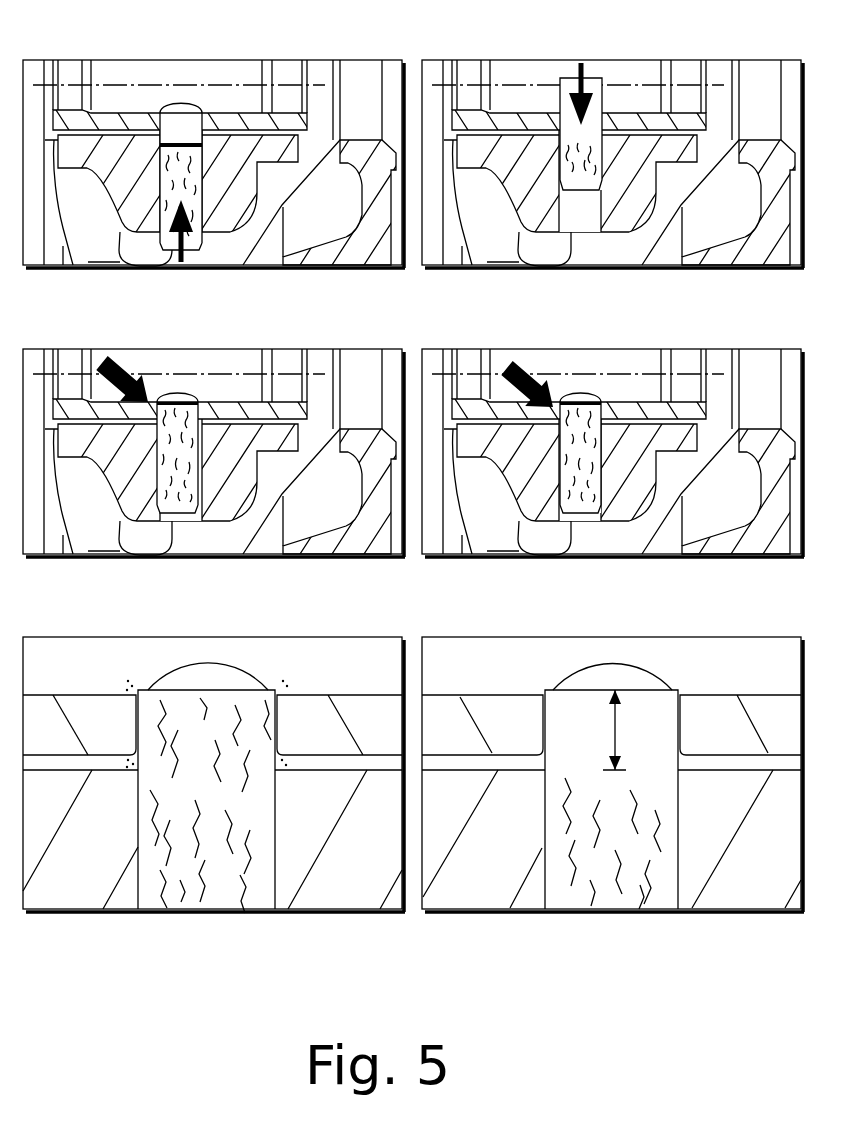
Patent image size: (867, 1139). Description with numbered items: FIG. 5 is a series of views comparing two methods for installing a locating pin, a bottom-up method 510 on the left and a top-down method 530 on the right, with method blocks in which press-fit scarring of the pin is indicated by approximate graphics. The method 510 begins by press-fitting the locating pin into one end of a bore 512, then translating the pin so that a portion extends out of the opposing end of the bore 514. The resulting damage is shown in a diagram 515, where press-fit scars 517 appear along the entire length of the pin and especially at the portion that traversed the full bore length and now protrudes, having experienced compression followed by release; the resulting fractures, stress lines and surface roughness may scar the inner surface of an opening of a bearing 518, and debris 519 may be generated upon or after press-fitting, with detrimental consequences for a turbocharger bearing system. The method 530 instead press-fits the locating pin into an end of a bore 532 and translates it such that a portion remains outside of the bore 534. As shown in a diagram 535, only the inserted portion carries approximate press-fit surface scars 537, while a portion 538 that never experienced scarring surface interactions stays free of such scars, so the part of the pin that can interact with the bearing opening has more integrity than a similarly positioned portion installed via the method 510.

The bottom-up method 510 is at (285, 24).
The top-down method 530 is at (677, 24).
The method block showing press-fitting into one end of a bore 512 is at (382, 95).
The method block showing translation out of opposing end of bore 514 is at (382, 384).
The diagram of damage 515 is at (214, 775).
The press-fit scars 517 is at (157, 712).
The bearing 518 is at (279, 726).
The debris 519 is at (113, 686).
The method block showing press-fitting into an end of a bore 532 is at (781, 95).
The method block showing a portion remaining outside the bore 534 is at (781, 384).
The diagram of press-fit surface scars and scar-free portion 535 is at (613, 774).
The press-fit surface scars 537 is at (567, 805).
The portion free of surface scars 538 is at (683, 730).